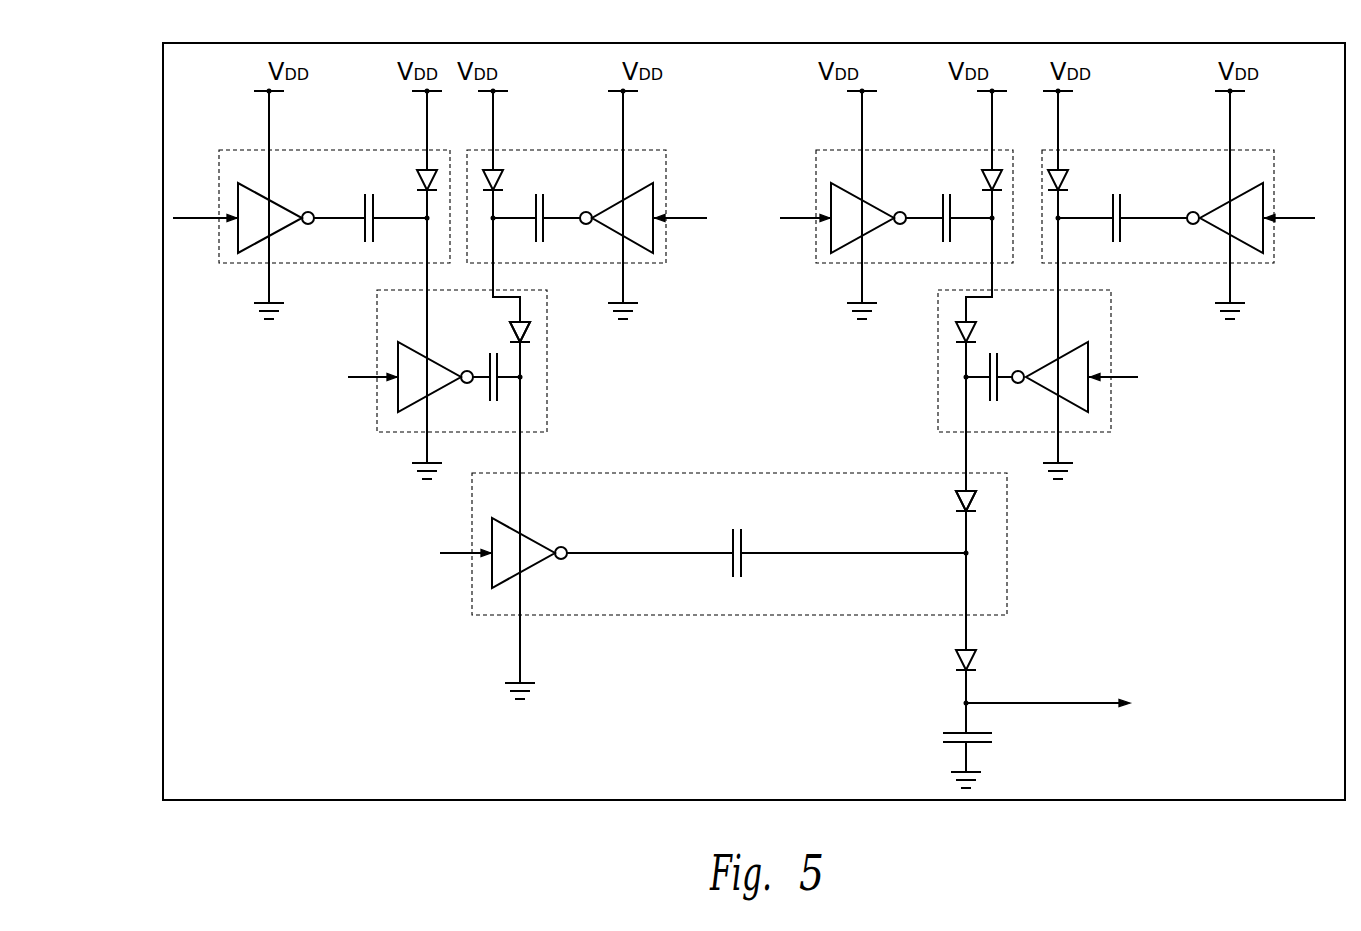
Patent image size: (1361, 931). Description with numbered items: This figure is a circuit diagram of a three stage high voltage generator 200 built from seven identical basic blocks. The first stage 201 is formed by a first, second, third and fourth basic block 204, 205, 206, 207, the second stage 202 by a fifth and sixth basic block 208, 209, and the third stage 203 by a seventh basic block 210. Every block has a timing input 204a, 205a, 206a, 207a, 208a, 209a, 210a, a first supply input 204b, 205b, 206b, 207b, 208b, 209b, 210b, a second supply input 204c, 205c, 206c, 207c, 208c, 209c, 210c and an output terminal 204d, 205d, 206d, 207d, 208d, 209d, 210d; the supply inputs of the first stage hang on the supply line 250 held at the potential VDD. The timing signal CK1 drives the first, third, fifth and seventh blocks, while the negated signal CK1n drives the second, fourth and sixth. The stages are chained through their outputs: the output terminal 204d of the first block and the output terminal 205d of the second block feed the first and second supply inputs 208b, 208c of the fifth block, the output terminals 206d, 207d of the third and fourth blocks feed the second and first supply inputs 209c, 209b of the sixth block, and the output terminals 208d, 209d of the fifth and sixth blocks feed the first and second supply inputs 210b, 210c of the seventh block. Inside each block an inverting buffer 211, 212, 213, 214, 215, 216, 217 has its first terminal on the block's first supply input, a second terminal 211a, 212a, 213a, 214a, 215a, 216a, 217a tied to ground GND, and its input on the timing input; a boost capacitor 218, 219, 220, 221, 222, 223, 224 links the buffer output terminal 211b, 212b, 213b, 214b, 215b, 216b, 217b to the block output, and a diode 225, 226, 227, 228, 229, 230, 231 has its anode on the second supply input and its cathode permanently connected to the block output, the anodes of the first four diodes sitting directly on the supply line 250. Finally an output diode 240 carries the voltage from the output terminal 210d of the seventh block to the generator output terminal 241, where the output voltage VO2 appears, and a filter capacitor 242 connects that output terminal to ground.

The high voltage generator 200 is at (407, 780).
The first stage 201 is at (200, 149).
The second stage 202 is at (203, 431).
The third stage 203 is at (694, 697).
The first basic block 204 is at (327, 242).
The timing input 204a is at (203, 220).
The first supply input 204b is at (262, 165).
The second supply input 204c is at (428, 128).
The output terminal 204d is at (427, 240).
The second basic block 205 is at (597, 157).
The timing input 205a is at (688, 218).
The first supply input 205b is at (623, 128).
The second supply input 205c is at (493, 108).
The output terminal 205d is at (495, 243).
The third basic block 206 is at (878, 160).
The timing input 206a is at (793, 218).
The first supply input 206b is at (860, 120).
The second supply input 206c is at (997, 128).
The output terminal 206d is at (993, 247).
The fourth basic block 207 is at (1117, 162).
The timing input 207a is at (1298, 218).
The first supply input 207b is at (1232, 122).
The second supply input 207c is at (1060, 103).
The output terminal 207d is at (1058, 243).
The fifth basic block 208 is at (398, 423).
The timing input 208a is at (400, 380).
The first supply input 208b is at (343, 333).
The second supply input 208c is at (530, 330).
The output terminal 208d is at (523, 393).
The sixth basic block 209 is at (952, 420).
The timing input 209a is at (1127, 378).
The first supply input 209b is at (1058, 305).
The second supply input 209c is at (966, 296).
The output terminal 209d is at (965, 397).
The seventh basic block 210 is at (800, 608).
The timing input 210a is at (470, 553).
The first supply input 210b is at (523, 487).
The second supply input 210c is at (972, 485).
The output terminal 210d is at (967, 585).
The inverting buffer 211 is at (268, 213).
The second terminal 211a is at (266, 287).
The output terminal 211b is at (333, 217).
The inverting buffer 212 is at (648, 188).
The second terminal 212a is at (623, 277).
The output terminal 212b is at (565, 216).
The inverting buffer 213 is at (840, 240).
The second terminal 213a is at (852, 298).
The output terminal 213b is at (923, 215).
The inverting buffer 214 is at (1252, 233).
The second terminal 214a is at (1230, 282).
The output terminal 214b is at (1163, 215).
The inverting buffer 215 is at (410, 390).
The second terminal 215a is at (428, 446).
The output terminal 215b is at (478, 381).
The inverting buffer 216 is at (1073, 388).
The second terminal 216a is at (1065, 445).
The output terminal 216b is at (1001, 368).
The inverting buffer 217 is at (500, 572).
The second terminal 217a is at (522, 665).
The output terminal 217b is at (582, 555).
The boost capacitor 218 is at (363, 193).
The boost capacitor 219 is at (540, 190).
The boost capacitor 220 is at (945, 193).
The boost capacitor 221 is at (1120, 230).
The boost capacitor 222 is at (488, 361).
The boost capacitor 223 is at (1000, 382).
The boost capacitor 224 is at (730, 565).
The diode 225 is at (423, 172).
The diode 226 is at (505, 173).
The diode 227 is at (987, 172).
The diode 228 is at (1062, 173).
The diode 229 is at (523, 340).
The diode 230 is at (959, 328).
The diode 231 is at (975, 500).
The output diode 240 is at (957, 667).
The output terminal 241 is at (1077, 705).
The filter capacitor 242 is at (958, 735).
The supply line 250 is at (259, 90).